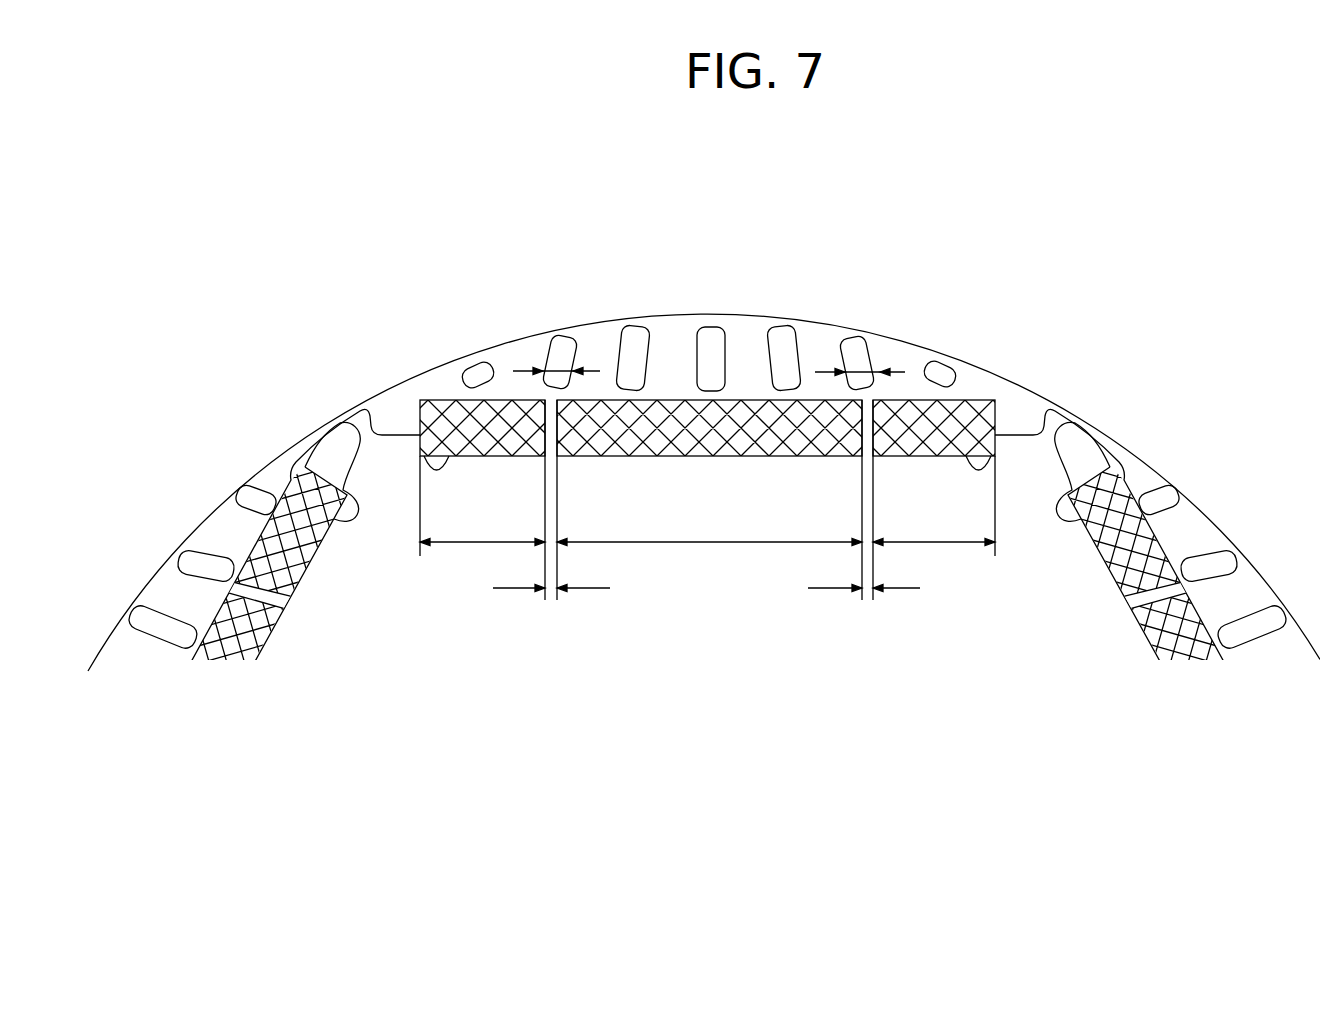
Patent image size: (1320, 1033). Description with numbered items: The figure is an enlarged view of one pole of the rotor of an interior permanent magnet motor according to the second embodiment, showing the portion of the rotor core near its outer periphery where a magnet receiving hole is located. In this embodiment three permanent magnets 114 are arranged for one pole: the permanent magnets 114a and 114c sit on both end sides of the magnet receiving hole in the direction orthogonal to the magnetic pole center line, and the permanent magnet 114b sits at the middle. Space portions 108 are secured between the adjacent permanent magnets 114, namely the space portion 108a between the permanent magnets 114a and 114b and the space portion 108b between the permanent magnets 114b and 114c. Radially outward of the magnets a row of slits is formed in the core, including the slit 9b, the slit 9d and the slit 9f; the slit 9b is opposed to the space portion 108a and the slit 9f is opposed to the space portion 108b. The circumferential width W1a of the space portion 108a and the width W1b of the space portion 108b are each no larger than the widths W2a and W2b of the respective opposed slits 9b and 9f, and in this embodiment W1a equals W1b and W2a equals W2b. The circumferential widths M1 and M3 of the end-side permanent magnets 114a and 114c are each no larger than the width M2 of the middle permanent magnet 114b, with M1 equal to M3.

The slit 9b is at (543, 335).
The slot 9d is at (730, 345).
The slit 9f is at (878, 342).
The space portion 108 is at (720, 358).
The space portion 108a is at (547, 417).
The space portion 108b is at (870, 423).
The permanent magnet 114 is at (696, 331).
The permanent magnet 114a is at (432, 412).
The permanent magnet 114b is at (668, 405).
The permanent magnet 114c is at (933, 412).
The circumferential width of slit 9b W2a is at (587, 367).
The circumferential width of slit 9f W2b is at (828, 368).
The circumferential width of space portion 108a W1a is at (563, 528).
The circumferential width of space portion 108b W1b is at (879, 528).
The circumferential width of permanent magnet 114a M1 is at (482, 506).
The circumferential width of permanent magnet 114b M2 is at (709, 530).
The circumferential width of permanent magnet 114c M3 is at (934, 506).